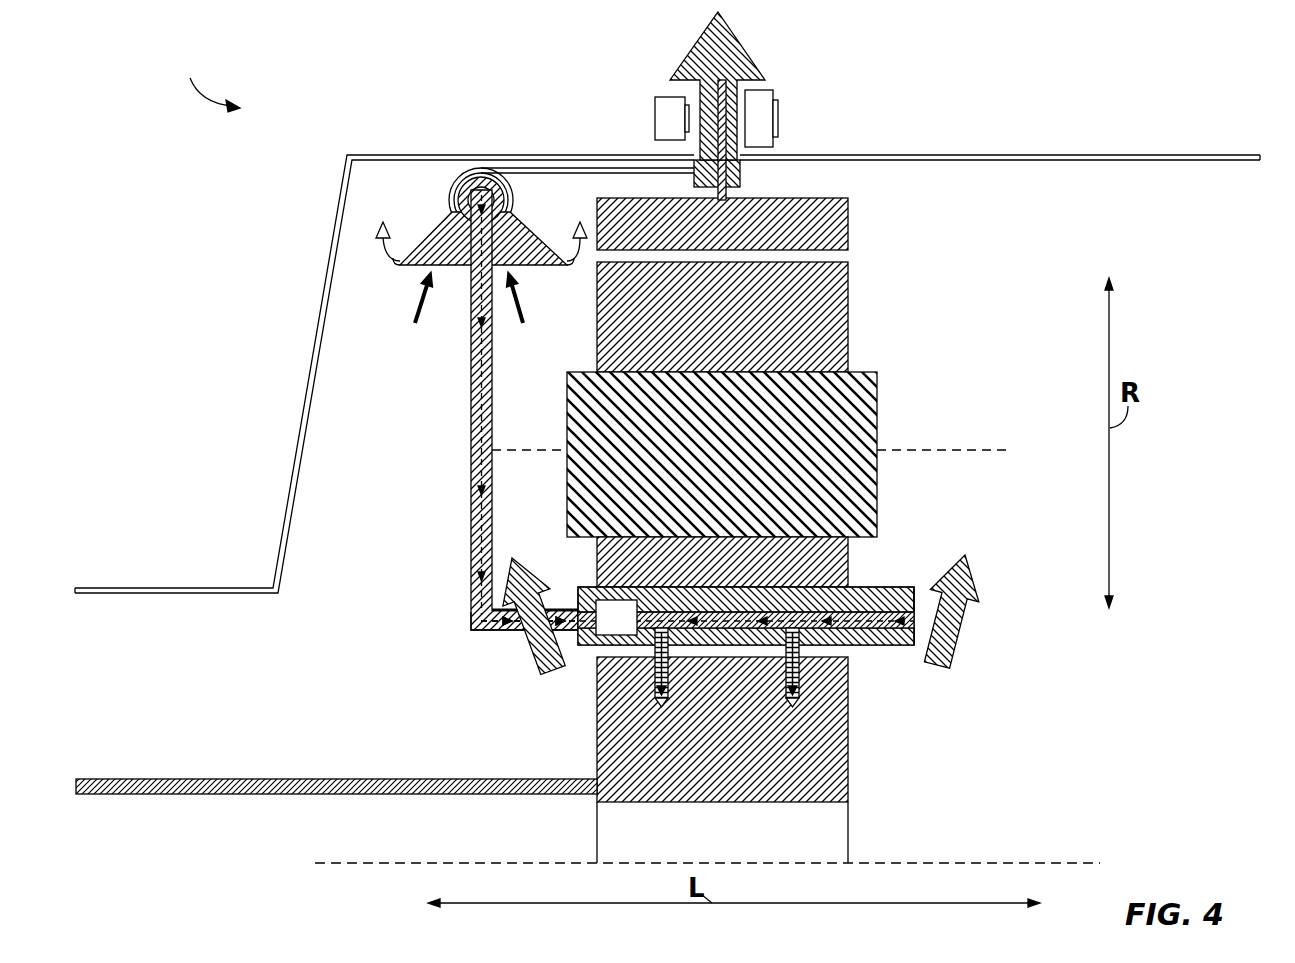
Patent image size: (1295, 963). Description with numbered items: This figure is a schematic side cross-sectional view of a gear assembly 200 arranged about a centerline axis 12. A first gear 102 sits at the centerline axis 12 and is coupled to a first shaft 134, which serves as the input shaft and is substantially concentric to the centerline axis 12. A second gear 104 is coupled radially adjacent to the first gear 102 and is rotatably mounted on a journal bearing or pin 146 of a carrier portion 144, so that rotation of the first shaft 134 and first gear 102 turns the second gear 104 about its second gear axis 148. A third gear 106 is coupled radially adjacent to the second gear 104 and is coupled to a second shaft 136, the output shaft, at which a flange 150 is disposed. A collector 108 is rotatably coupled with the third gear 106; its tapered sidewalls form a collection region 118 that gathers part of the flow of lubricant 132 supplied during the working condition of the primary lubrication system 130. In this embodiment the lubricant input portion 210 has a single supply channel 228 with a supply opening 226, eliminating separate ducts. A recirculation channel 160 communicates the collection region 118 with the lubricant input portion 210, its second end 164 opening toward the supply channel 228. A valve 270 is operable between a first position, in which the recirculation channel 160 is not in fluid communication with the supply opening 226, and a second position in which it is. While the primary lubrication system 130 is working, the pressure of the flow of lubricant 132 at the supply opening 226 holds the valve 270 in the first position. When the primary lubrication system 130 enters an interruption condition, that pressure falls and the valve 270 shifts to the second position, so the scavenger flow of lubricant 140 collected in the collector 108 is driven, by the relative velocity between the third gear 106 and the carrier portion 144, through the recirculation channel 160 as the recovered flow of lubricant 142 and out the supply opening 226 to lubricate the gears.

The centerline axis 12 is at (367, 863).
The first gear 102 is at (848, 790).
The second gear 104 is at (848, 317).
The third gear 106 is at (848, 228).
The collector 108 is at (437, 220).
The collection region 118 is at (412, 300).
The primary lubrication system 130 is at (905, 597).
The flow of lubricant 132 is at (800, 700).
The first shaft 134 is at (135, 778).
The second shaft 136 is at (141, 588).
The scavenger flow of lubricant 140 is at (747, 52).
The recovered flow of lubricant 142 is at (472, 382).
The carrier portion 144 is at (567, 420).
The journal bearing or pin 146 is at (850, 418).
The second gear axis 148 is at (976, 450).
The flange 150 is at (800, 111).
The recirculation channel 160 is at (471, 438).
The second end 164 is at (471, 627).
The gear assembly 200 is at (206, 80).
The lubricant input portion 210 is at (885, 630).
The supply opening 226 is at (660, 700).
The supply channel 228 is at (885, 597).
The valve 270 is at (617, 618).